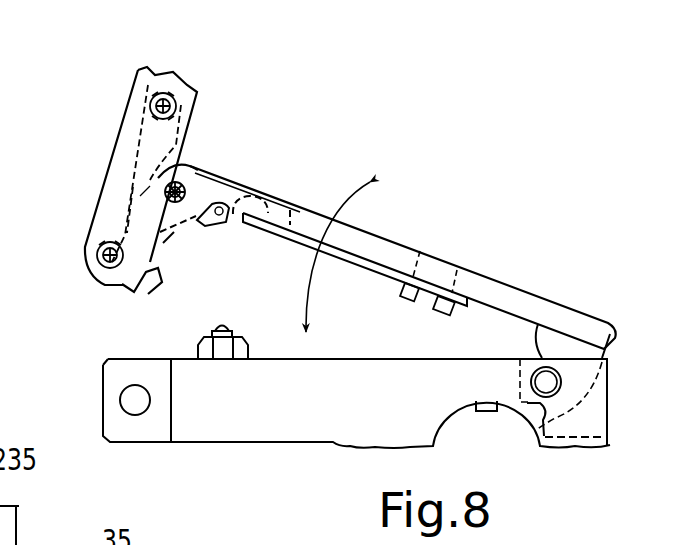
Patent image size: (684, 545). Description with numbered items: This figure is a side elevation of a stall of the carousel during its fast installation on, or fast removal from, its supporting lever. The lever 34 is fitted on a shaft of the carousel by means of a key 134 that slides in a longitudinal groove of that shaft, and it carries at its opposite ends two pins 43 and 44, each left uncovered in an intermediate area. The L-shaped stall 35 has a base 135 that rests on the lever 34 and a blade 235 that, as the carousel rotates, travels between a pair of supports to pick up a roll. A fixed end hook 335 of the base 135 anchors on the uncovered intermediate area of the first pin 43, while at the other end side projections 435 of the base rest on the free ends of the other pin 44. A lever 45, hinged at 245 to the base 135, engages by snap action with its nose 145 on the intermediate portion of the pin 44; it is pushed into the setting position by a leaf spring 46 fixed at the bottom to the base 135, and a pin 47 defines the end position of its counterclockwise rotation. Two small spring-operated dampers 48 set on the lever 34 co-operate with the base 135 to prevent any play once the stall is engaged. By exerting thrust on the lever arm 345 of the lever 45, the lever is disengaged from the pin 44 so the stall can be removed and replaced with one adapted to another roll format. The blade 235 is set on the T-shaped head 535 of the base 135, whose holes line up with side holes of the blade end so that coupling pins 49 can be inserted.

The lever 34 is at (258, 448).
The stall 35 is at (387, 202).
The base 135 is at (500, 290).
The blade 235 is at (136, 158).
The fixed end hook 335 is at (583, 397).
The side projections 435 is at (174, 234).
The T-shaped head 535 is at (140, 140).
The pin 43 is at (547, 385).
The pin 44 is at (128, 402).
The lever 45 is at (138, 197).
The leaf spring 46 is at (366, 262).
The pin 47 is at (230, 214).
The spring-operated dampers 48 is at (228, 330).
The coupling pins 49 is at (157, 102).
The key 134 is at (488, 415).
The nose 145 is at (147, 277).
The hinge 245 is at (160, 193).
The lever arm 345 is at (272, 197).